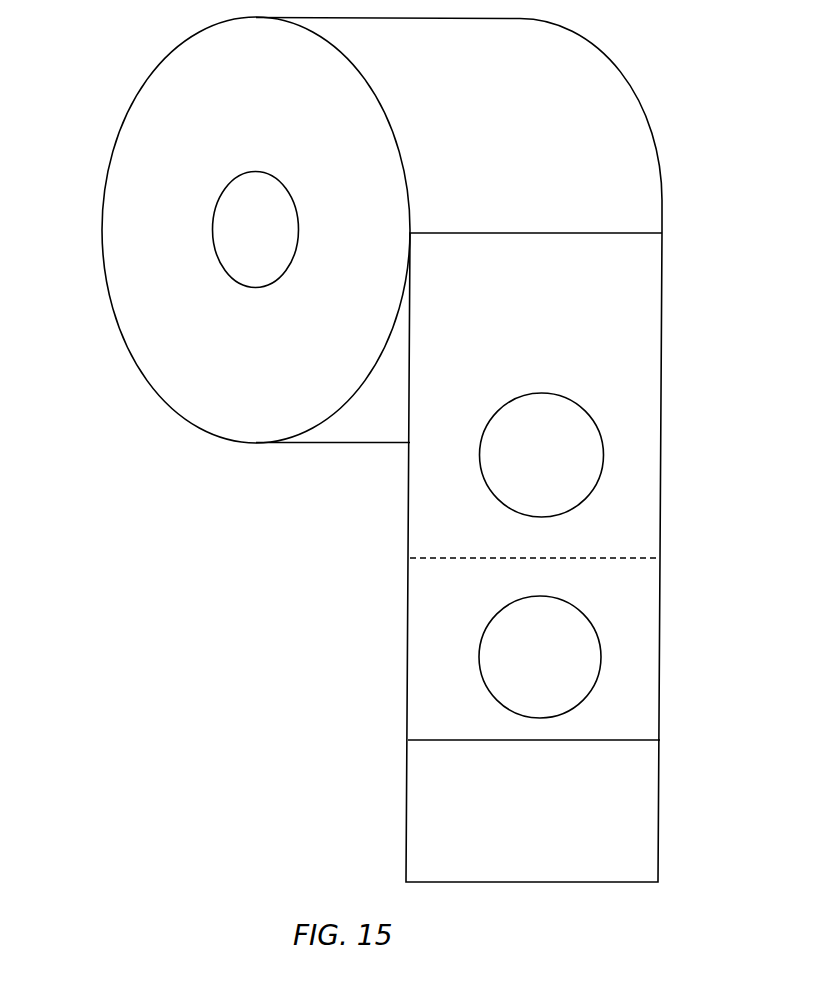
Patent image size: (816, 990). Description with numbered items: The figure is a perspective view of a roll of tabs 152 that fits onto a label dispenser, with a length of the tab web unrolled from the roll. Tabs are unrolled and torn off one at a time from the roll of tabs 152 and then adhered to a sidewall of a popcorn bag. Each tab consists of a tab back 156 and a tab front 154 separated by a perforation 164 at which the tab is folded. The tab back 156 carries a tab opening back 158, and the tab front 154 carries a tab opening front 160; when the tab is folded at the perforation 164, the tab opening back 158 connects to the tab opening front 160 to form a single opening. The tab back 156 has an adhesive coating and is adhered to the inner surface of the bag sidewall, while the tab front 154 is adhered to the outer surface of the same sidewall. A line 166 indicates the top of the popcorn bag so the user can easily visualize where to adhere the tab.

The roll of tabs 152 is at (113, 221).
The tab front 154 is at (646, 830).
The tab back 156 is at (650, 300).
The tab opening back 158 is at (558, 455).
The tab opening front 160 is at (558, 657).
The perforation 164 is at (645, 560).
The line 166 is at (646, 741).